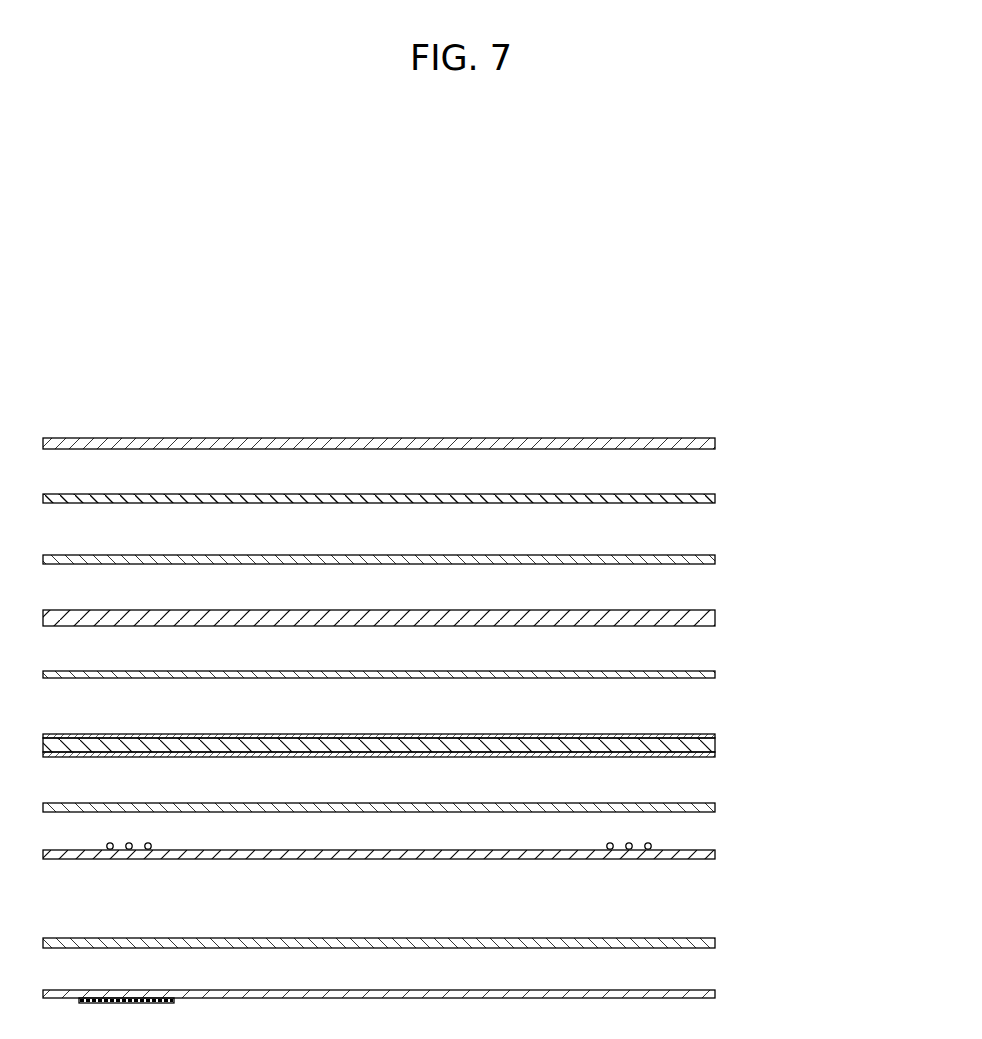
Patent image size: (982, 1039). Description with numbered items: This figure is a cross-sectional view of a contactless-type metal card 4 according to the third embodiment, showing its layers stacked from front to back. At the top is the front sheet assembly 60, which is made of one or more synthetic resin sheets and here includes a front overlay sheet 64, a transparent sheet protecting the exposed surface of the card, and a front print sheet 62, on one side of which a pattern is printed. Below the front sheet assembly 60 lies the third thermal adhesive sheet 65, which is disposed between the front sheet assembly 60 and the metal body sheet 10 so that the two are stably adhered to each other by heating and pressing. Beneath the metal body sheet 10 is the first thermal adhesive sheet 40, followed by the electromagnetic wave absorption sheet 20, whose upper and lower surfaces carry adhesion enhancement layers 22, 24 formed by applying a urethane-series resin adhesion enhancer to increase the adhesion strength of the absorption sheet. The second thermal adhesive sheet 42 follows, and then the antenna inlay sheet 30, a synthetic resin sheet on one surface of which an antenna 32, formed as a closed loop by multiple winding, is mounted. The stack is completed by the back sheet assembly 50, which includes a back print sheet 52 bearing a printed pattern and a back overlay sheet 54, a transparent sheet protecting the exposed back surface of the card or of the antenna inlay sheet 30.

The contactless-type metal card 4 is at (600, 341).
The front sheet assembly 60 is at (463, 471).
The front overlay sheet 64 is at (715, 443).
The front print sheet 62 is at (715, 498).
The third thermal adhesive sheet 65 is at (715, 558).
The metal body sheet 10 is at (715, 615).
The first thermal adhesive sheet 40 is at (715, 674).
The adhesion enhancement layer 22 is at (715, 735).
The electromagnetic wave absorption sheet 20 is at (703, 744).
The adhesion enhancement layer 24 is at (710, 755).
The second thermal adhesive sheet 42 is at (715, 807).
The antenna inlay sheet 30 is at (715, 855).
The antenna 32 is at (610, 849).
The back sheet assembly 50 is at (462, 985).
The back print sheet 52 is at (715, 943).
The back overlay sheet 54 is at (715, 994).